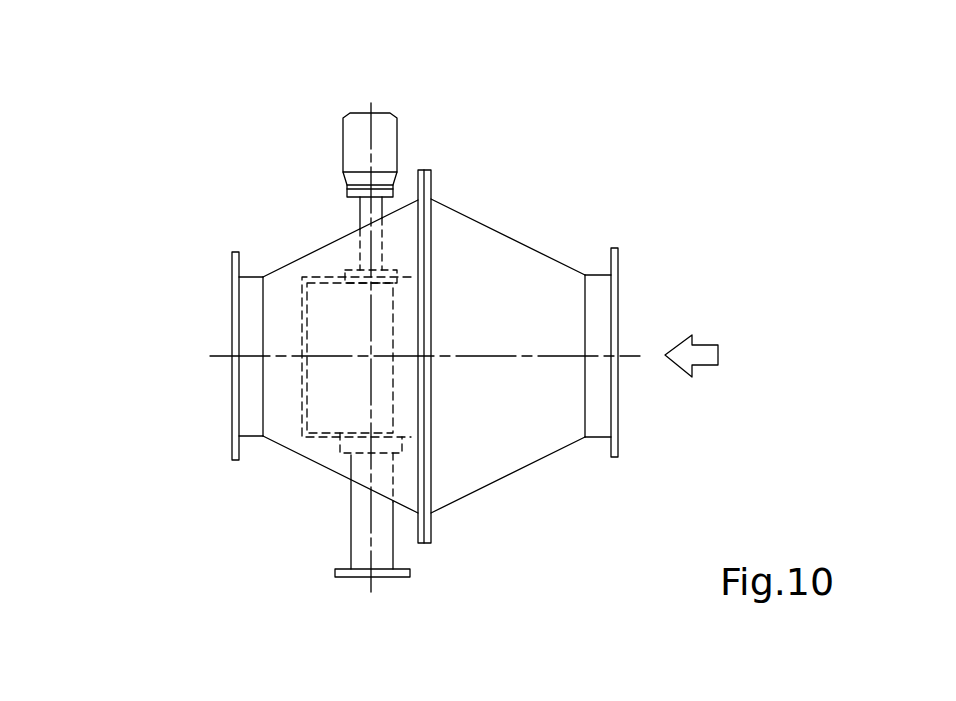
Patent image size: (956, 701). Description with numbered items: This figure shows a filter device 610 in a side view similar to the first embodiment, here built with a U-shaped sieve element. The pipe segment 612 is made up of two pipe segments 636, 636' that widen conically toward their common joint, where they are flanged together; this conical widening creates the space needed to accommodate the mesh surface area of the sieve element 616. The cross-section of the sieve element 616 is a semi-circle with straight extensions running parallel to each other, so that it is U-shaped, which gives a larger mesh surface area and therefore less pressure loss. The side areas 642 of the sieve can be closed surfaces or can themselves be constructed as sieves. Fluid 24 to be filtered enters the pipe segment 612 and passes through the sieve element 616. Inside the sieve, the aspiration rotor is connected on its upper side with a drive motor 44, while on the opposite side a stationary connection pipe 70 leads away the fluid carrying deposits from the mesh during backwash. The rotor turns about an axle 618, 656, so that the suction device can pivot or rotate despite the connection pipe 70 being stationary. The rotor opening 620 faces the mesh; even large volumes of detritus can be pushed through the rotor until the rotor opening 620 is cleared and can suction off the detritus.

The filter device 610 is at (800, 26).
The pipe segment 612 is at (493, 220).
The sieve element 616 is at (302, 378).
The rotor opening 620 is at (323, 413).
The conical pipe segment 636 is at (531, 287).
The conical pipe segment 636' is at (323, 287).
The side area 642 is at (325, 438).
The drive motor 44 is at (385, 142).
The connection pipe 70 is at (363, 528).
The axle 618 is at (413, 616).
The axle 656 is at (373, 558).
The fluid flow 24 is at (498, 357).